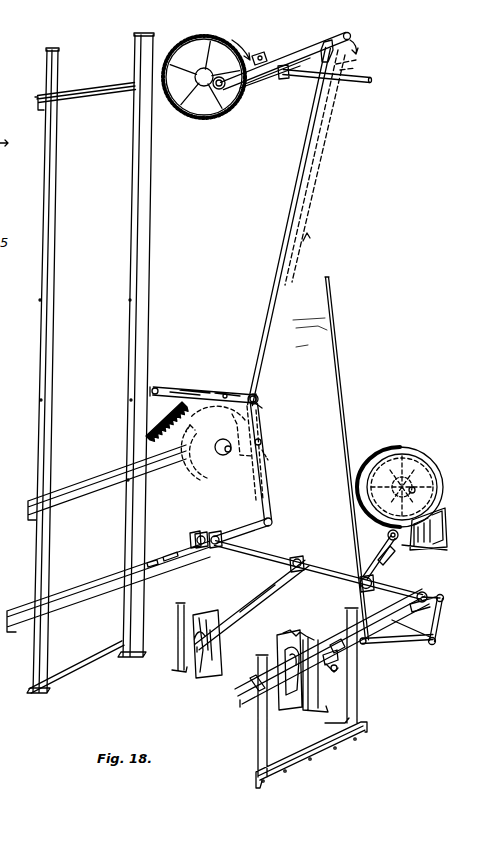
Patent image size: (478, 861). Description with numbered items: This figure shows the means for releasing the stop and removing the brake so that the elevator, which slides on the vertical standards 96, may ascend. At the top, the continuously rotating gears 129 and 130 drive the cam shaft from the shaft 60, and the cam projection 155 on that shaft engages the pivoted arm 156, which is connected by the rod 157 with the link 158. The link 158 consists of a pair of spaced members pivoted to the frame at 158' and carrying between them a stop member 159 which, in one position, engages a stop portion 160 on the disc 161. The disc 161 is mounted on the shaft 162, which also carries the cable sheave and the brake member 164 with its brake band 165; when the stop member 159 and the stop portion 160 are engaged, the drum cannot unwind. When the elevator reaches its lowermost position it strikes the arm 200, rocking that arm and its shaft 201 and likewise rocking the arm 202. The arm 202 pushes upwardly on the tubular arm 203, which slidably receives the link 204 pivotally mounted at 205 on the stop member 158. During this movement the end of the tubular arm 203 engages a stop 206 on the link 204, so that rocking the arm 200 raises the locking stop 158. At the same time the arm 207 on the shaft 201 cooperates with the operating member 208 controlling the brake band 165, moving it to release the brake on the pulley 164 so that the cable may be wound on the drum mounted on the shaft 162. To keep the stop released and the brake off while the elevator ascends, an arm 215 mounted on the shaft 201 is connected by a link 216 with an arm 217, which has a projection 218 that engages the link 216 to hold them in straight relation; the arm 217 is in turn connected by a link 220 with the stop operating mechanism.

The gear 129 is at (200, 118).
The cam projection 155 is at (222, 90).
The gear 130 is at (260, 57).
The pivoted arm 156 is at (252, 84).
The shaft 60 is at (360, 72).
The rod 157 is at (300, 155).
The link 220 is at (334, 372).
The link 158 is at (203, 384).
The pivot 158' is at (170, 400).
The disc 161 is at (228, 466).
The pivot 205 is at (258, 400).
The stop member 159 is at (268, 406).
The link 204 is at (262, 418).
The stop portion 160 is at (258, 431).
The stop 206 is at (262, 442).
The shaft 162 is at (262, 452).
The tubular arm 203 is at (266, 496).
The arm 202 is at (240, 530).
The shaft 201 is at (290, 566).
The arm 207 is at (374, 583).
The operating member 208 is at (390, 553).
The brake band 165 is at (380, 532).
The brake member 164 is at (410, 466).
The arm 200 is at (250, 607).
The projection 218 is at (385, 614).
The arm 217 is at (333, 672).
The link 216 is at (410, 636).
The arm 215 is at (437, 632).
The vertical standards 96 is at (205, 668).